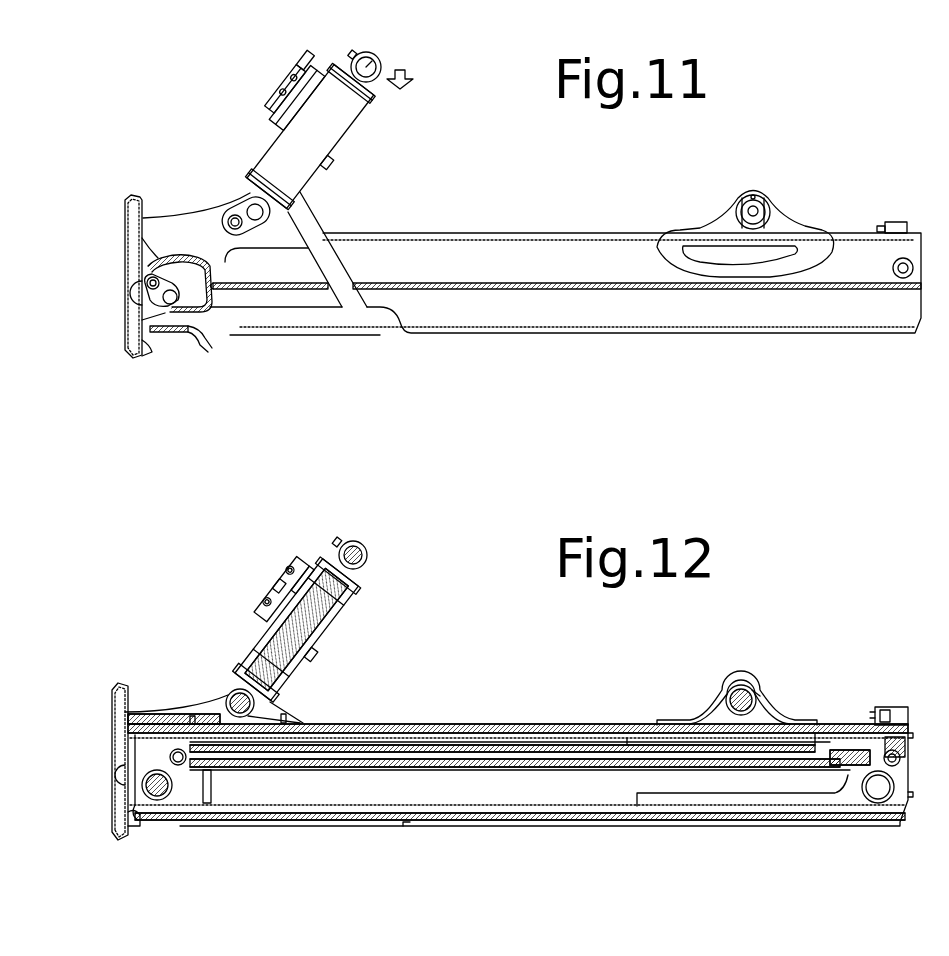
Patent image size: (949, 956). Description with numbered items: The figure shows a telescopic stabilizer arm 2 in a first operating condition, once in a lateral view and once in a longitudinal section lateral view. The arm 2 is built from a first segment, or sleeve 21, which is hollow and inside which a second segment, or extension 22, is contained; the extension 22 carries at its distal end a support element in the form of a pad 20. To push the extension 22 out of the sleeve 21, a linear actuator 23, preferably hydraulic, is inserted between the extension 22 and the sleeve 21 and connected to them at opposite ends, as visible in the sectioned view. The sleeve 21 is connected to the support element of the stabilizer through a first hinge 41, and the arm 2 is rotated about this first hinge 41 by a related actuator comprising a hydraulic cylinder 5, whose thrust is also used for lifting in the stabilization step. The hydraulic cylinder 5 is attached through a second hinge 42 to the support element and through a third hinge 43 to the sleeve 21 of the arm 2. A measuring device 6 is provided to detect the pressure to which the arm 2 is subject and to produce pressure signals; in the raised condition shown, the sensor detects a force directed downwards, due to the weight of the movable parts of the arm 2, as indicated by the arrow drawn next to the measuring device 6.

In FIG. 11, the arm 2 is at (565, 276).
In FIG. 12, the arm 2 is at (520, 680).
In FIG. 11, the hydraulic cylinder 5 is at (257, 108).
In FIG. 12, the hydraulic cylinder 5 is at (238, 588).
In FIG. 11, the measuring device 6 is at (381, 60).
In FIG. 12, the measuring device 6 is at (367, 556).
In FIG. 11, the pad 20 is at (135, 233).
In FIG. 12, the pad 20 is at (111, 748).
In FIG. 11, the first segment (sleeve) 21 is at (548, 257).
In FIG. 12, the first segment (sleeve) 21 is at (488, 725).
In FIG. 11, the second segment (extension) 22 is at (178, 318).
In FIG. 12, the second segment (extension) 22 is at (327, 787).
In FIG. 12, the linear actuator 23 is at (603, 753).
In FIG. 11, the first hinge 41 is at (763, 180).
In FIG. 12, the first hinge 41 is at (758, 675).
In FIG. 12, the second hinge 42 is at (357, 538).
In FIG. 11, the third hinge 43 is at (220, 195).
In FIG. 12, the third hinge 43 is at (205, 663).